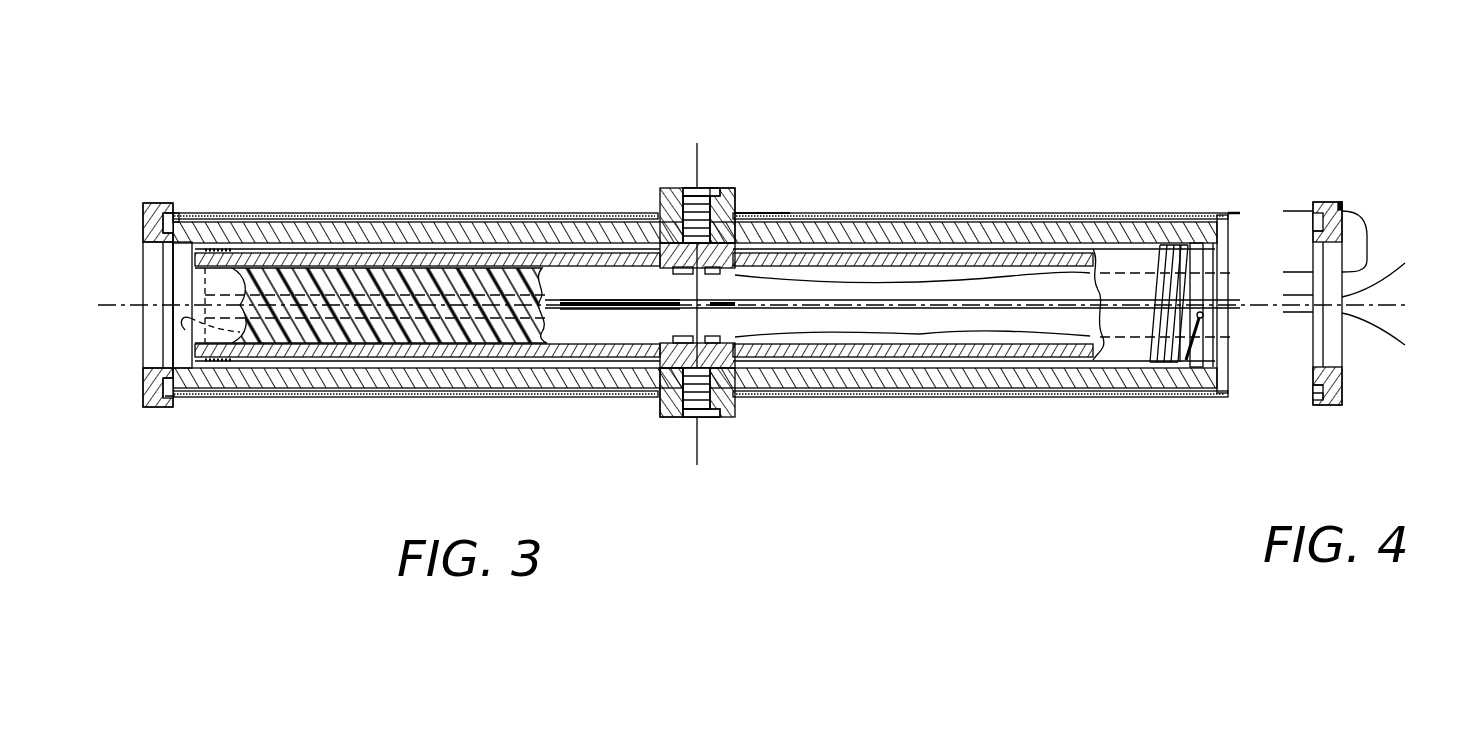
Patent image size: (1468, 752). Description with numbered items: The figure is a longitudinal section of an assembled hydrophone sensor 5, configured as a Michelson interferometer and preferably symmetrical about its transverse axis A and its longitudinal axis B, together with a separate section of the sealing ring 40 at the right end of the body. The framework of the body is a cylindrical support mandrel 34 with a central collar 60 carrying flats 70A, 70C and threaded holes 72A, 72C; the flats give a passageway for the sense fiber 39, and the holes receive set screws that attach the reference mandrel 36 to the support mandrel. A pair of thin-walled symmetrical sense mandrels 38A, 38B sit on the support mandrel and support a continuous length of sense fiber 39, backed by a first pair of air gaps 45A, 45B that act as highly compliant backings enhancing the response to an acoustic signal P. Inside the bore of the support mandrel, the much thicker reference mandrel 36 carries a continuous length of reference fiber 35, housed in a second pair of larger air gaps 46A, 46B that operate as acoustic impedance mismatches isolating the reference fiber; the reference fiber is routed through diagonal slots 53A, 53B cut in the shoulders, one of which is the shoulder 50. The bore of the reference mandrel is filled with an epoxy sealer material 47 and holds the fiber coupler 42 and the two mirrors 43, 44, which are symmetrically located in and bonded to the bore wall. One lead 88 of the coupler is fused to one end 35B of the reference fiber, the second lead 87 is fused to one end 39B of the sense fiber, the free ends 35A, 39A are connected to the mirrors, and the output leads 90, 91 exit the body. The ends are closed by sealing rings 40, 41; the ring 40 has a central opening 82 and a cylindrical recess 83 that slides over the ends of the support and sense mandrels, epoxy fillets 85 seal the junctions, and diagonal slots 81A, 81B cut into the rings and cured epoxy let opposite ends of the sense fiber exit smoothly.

In FIG. 3, the hydrophone sensor 5 is at (960, 62).
In FIG. 3, the support mandrel 34 is at (386, 236).
In FIG. 3, the reference fiber 35 is at (1142, 392).
In FIG. 3, the free end of reference fiber 35A is at (1238, 394).
In FIG. 3, the end of reference fiber 35B is at (185, 330).
In FIG. 3, the reference mandrel 36 is at (968, 255).
In FIG. 3, the sense mandrel 38A is at (1008, 213).
In FIG. 3, the sense mandrel 38B is at (544, 213).
In FIG. 3, the sense fiber 39 is at (1165, 213).
In FIG. 3, the free end of sense fiber 39A is at (1242, 212).
In FIG. 3, the end of sense fiber 39B is at (240, 290).
In FIG. 4, the sealing ring 40 is at (1312, 200).
In FIG. 3, the sealing ring 41 is at (160, 196).
In FIG. 3, the fiber coupler 42 is at (693, 302).
In FIG. 3, the mirror 43 is at (712, 278).
In FIG. 3, the mirror 44 is at (714, 336).
In FIG. 3, the first air gap 45A is at (833, 219).
In FIG. 3, the first air gap 45B is at (300, 219).
In FIG. 3, the second air gap 46A is at (941, 253).
In FIG. 3, the second air gap 46B is at (456, 253).
In FIG. 3, the sealer material 47 is at (545, 342).
In FIG. 3, the shoulder 50 is at (1205, 394).
In FIG. 3, the diagonal slot 53A is at (1222, 394).
In FIG. 3, the diagonal slot 53B is at (190, 312).
In FIG. 3, the central collar 60 is at (657, 200).
In FIG. 3, the flat 70A is at (723, 212).
In FIG. 3, the flat 70C is at (686, 418).
In FIG. 3, the threaded hole 72A is at (694, 205).
In FIG. 3, the threaded hole 72C is at (692, 416).
In FIG. 4, the diagonal slot 81A is at (1342, 204).
In FIG. 3, the diagonal slot 81B is at (178, 212).
In FIG. 4, the central opening 82 is at (1325, 247).
In FIG. 4, the cylindrical recess 83 is at (1323, 393).
In FIG. 3, the epoxy fillet 85 is at (745, 213).
In FIG. 3, the second lead of coupler 87 is at (580, 300).
In FIG. 3, the first lead of coupler 88 is at (625, 312).
In FIG. 4, the output lead of coupler 90 is at (1392, 270).
In FIG. 4, the output lead of coupler 91 is at (1380, 338).
In FIG. 3, the axis A— A is at (697, 307).
In FIG. 3, the axis B— B is at (747, 306).
In FIG. 3, the acoustic signal P is at (893, 212).